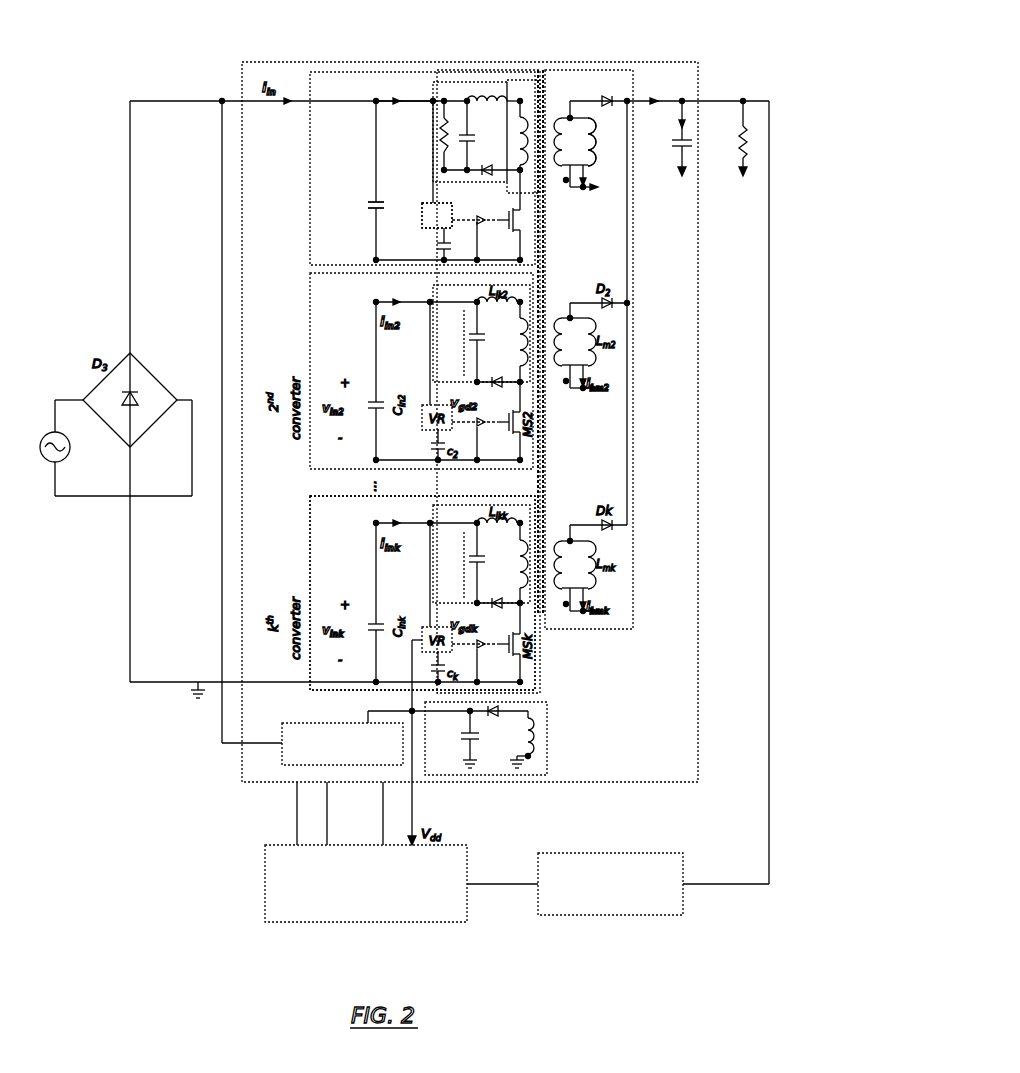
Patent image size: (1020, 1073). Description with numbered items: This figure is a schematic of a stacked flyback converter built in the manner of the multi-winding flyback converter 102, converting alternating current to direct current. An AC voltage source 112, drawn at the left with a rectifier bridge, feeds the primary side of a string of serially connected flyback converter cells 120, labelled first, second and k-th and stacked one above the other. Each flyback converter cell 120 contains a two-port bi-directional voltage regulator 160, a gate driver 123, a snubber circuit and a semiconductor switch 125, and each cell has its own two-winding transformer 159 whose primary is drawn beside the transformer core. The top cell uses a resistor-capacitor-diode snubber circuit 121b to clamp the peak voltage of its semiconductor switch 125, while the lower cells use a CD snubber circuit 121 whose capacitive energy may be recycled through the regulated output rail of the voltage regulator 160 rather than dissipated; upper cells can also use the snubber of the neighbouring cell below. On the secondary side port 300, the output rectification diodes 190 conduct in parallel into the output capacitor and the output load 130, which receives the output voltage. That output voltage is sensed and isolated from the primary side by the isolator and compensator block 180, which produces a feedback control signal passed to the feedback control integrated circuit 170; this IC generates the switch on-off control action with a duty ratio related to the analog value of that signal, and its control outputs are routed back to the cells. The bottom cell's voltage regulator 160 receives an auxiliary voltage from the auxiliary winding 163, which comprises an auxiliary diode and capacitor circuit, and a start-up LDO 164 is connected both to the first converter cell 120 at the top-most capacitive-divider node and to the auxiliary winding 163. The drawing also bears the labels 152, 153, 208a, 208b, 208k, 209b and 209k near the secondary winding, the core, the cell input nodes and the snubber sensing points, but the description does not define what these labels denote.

The multi-winding flyback converter 102 is at (297, 60).
The AC voltage source 112 is at (106, 448).
The flyback converter cell 120 is at (363, 77).
The CD snubber circuit 121 is at (545, 400).
The RCD snubber circuit 121b is at (437, 70).
The gate driver 123 is at (486, 229).
The semiconductor switch 125 is at (537, 681).
The output load 130 is at (725, 138).
The magnetizing inductance 152 is at (605, 142).
The transformer core 153 is at (489, 72).
The two-winding transformer 159 is at (538, 72).
The two-port bi-directional voltage regulator 160 is at (433, 229).
The auxiliary winding 163 is at (541, 768).
The start-up LDO 164 is at (281, 749).
The feedback control integrated circuit 170 is at (468, 903).
The isolator and compensator block 180 is at (684, 905).
The output rectification diodes 190 is at (613, 73).
The first converter input node 208a is at (381, 114).
The second converter input node 208b is at (405, 377).
The k-th converter input node 208k is at (405, 599).
The second converter snubber 209b is at (462, 372).
The k-th converter snubber 209k is at (462, 594).
The secondary side port 300 is at (634, 630).